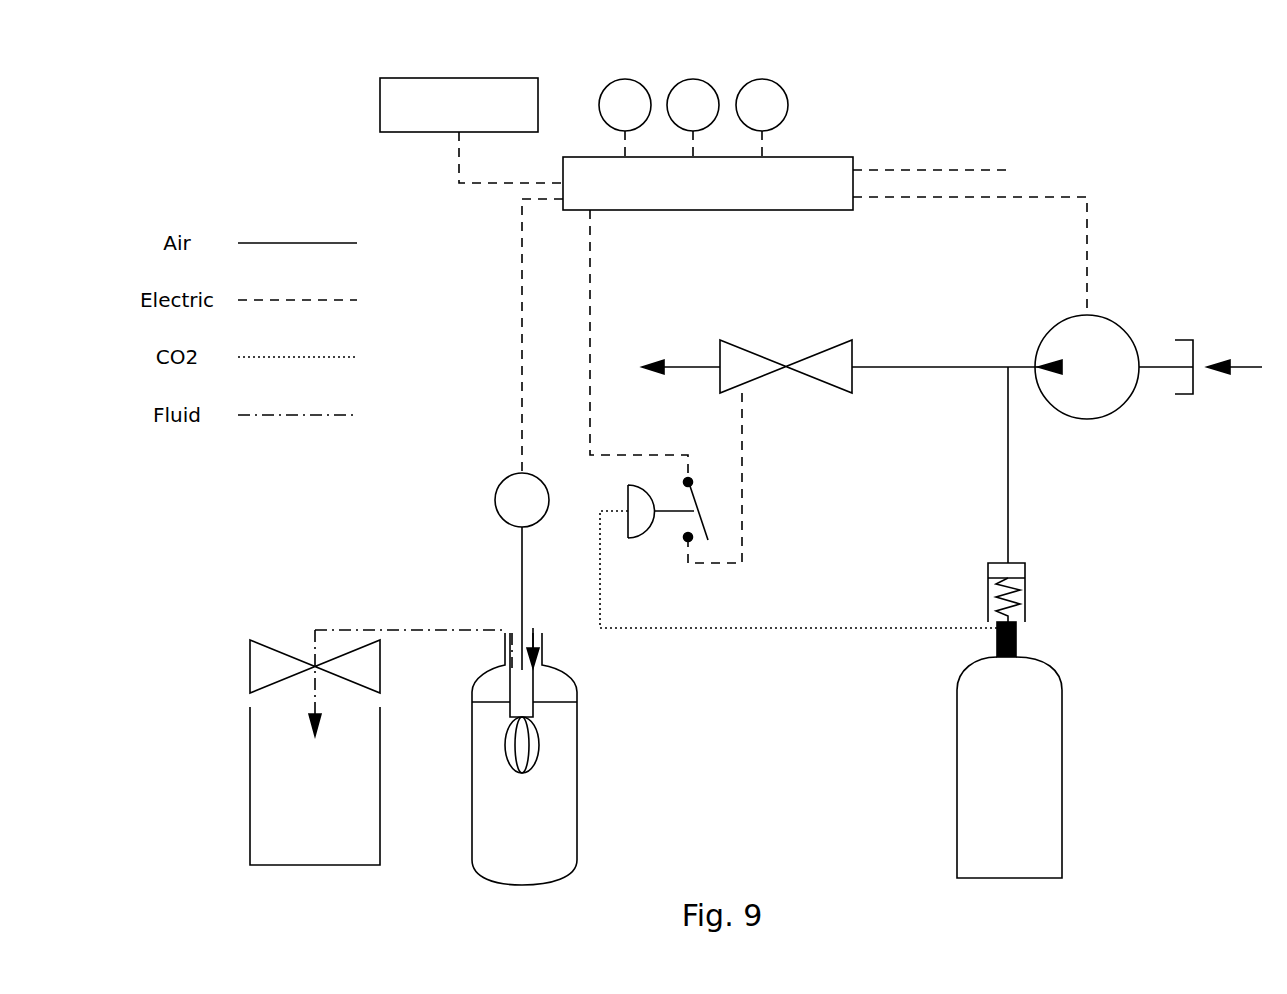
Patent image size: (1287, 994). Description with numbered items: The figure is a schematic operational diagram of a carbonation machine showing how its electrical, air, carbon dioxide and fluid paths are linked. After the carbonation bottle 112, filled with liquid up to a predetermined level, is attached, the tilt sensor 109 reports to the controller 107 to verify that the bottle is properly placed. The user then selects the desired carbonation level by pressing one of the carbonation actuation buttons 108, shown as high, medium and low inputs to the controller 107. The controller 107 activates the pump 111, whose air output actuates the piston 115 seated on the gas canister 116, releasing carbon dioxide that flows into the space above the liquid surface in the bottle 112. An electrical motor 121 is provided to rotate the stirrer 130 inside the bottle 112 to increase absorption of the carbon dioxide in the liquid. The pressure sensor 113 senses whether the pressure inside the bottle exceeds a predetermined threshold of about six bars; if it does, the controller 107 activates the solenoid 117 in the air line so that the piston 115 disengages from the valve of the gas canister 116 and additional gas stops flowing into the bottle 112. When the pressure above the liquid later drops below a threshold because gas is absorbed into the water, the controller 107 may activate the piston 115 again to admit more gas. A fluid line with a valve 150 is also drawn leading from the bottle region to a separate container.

The controller 107 is at (826, 157).
The carbonation actuation buttons 108 is at (633, 79).
The tilt sensor 109 is at (380, 100).
The pump 111 is at (1065, 318).
The bottle 112 is at (580, 768).
The pressure sensor 113 is at (641, 538).
The piston 115 is at (1025, 578).
The gas canister 116 is at (1062, 767).
The solenoid 117 is at (812, 380).
The motor 121 is at (503, 482).
The stirrer 130 is at (503, 745).
The fluid drain valve 150 is at (290, 657).